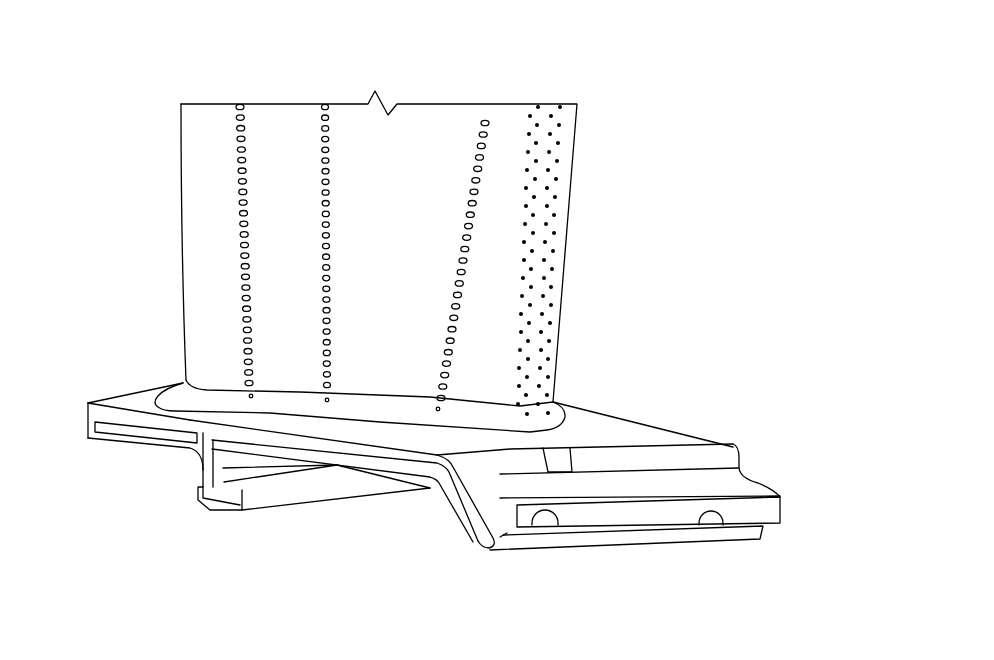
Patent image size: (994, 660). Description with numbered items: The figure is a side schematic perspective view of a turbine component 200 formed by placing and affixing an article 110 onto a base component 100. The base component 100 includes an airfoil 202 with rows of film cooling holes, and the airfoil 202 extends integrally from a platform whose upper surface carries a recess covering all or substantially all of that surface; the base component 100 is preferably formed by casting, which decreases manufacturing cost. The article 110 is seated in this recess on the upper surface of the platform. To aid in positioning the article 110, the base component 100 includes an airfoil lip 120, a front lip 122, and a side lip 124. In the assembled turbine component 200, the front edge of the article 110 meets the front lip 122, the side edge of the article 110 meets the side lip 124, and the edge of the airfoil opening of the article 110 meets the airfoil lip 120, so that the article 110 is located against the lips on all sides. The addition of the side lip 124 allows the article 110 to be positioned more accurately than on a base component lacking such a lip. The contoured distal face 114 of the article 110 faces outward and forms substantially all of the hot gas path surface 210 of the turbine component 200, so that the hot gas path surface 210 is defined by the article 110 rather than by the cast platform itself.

The turbine component 200 is at (778, 62).
The airfoil 202 is at (182, 248).
The article 110 is at (140, 392).
The airfoil lip 120 is at (203, 507).
The hot gas path surface 210 is at (352, 508).
The side lip 124 is at (622, 343).
The contoured distal face 114 is at (660, 378).
The front lip 122 is at (777, 408).
The base component 100 is at (688, 585).